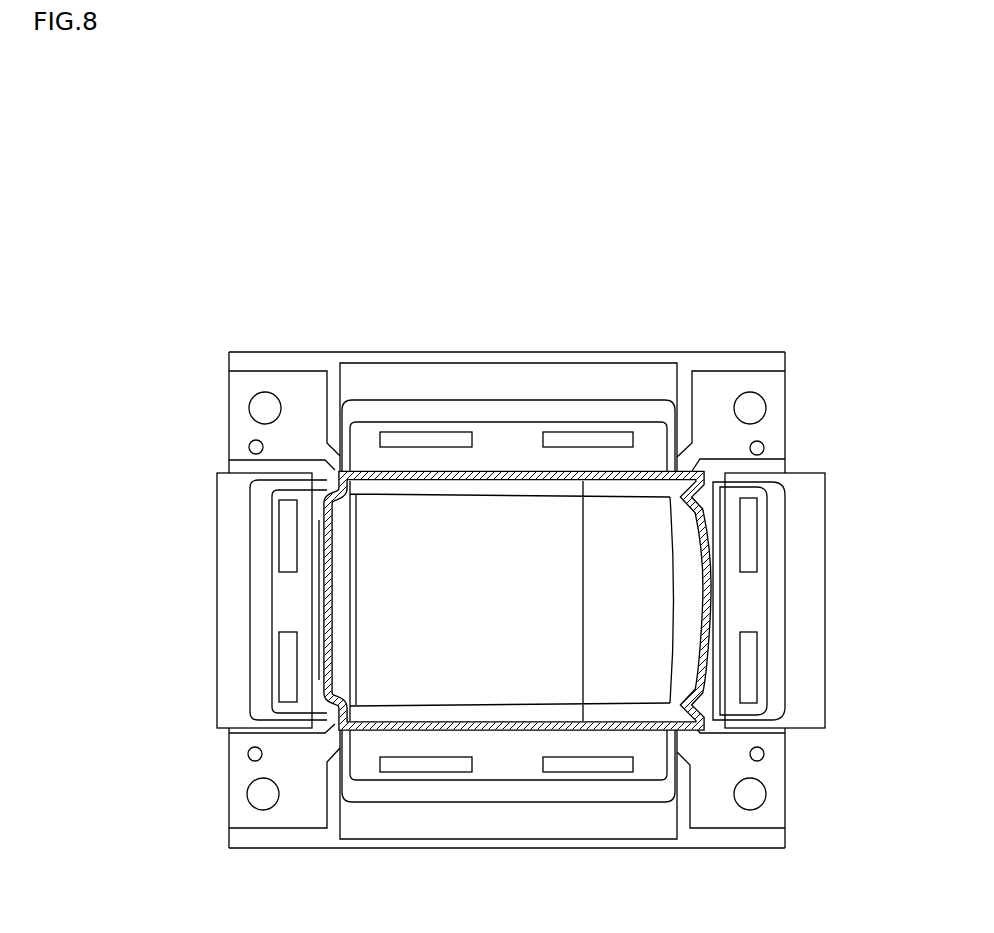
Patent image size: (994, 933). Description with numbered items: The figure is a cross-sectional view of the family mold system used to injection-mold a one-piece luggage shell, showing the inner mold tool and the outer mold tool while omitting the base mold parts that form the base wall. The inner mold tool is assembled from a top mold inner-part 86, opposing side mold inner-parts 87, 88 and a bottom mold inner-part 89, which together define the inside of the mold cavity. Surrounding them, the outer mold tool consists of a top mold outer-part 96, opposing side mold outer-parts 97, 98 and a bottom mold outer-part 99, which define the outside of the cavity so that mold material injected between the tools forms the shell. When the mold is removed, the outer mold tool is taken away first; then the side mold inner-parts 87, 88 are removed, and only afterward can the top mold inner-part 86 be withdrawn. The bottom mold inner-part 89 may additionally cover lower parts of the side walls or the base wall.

The top mold inner-part 86 is at (687, 555).
The side mold inner-part 87 is at (517, 492).
The side mold inner-part 88 is at (503, 713).
The bottom mold inner-part 89 is at (342, 547).
The top mold outer-part 96 is at (810, 573).
The side mold outer-part 97 is at (540, 387).
The side mold outer-part 98 is at (532, 770).
The bottom mold outer-part 99 is at (232, 587).